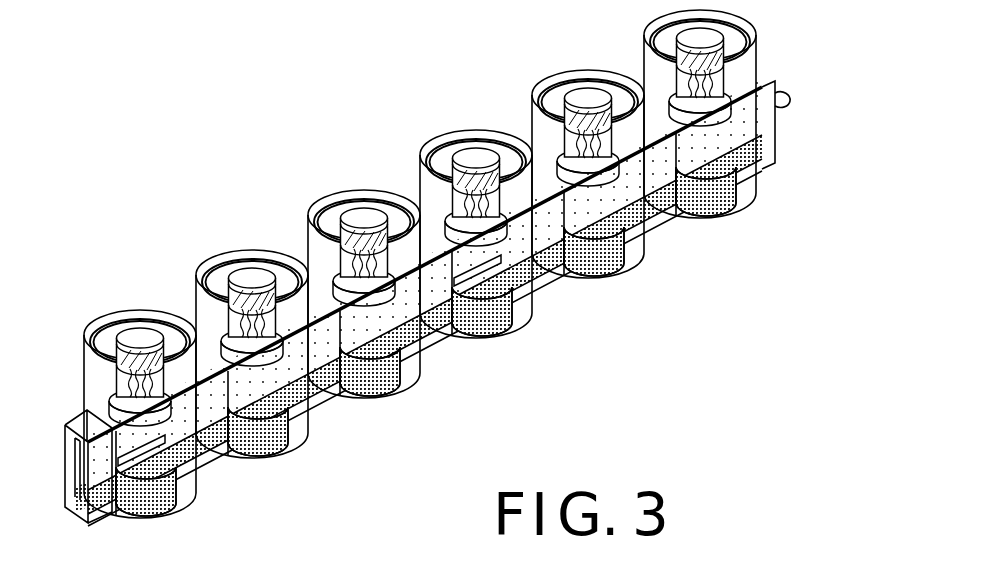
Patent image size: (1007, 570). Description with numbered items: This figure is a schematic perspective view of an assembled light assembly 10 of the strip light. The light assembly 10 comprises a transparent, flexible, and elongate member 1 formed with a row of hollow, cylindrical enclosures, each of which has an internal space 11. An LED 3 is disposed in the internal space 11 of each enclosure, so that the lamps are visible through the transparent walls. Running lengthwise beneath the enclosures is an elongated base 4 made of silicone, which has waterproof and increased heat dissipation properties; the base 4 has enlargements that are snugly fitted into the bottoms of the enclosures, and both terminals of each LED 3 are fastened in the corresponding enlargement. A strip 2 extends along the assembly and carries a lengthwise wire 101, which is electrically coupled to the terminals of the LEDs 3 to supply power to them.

The elongate member 1 is at (110, 330).
The strip 2 is at (317, 387).
The LED 3 is at (112, 389).
The elongated base 4 is at (157, 497).
The light assembly 10 is at (453, 283).
The internal space 11 is at (323, 253).
The wire 101 is at (778, 105).